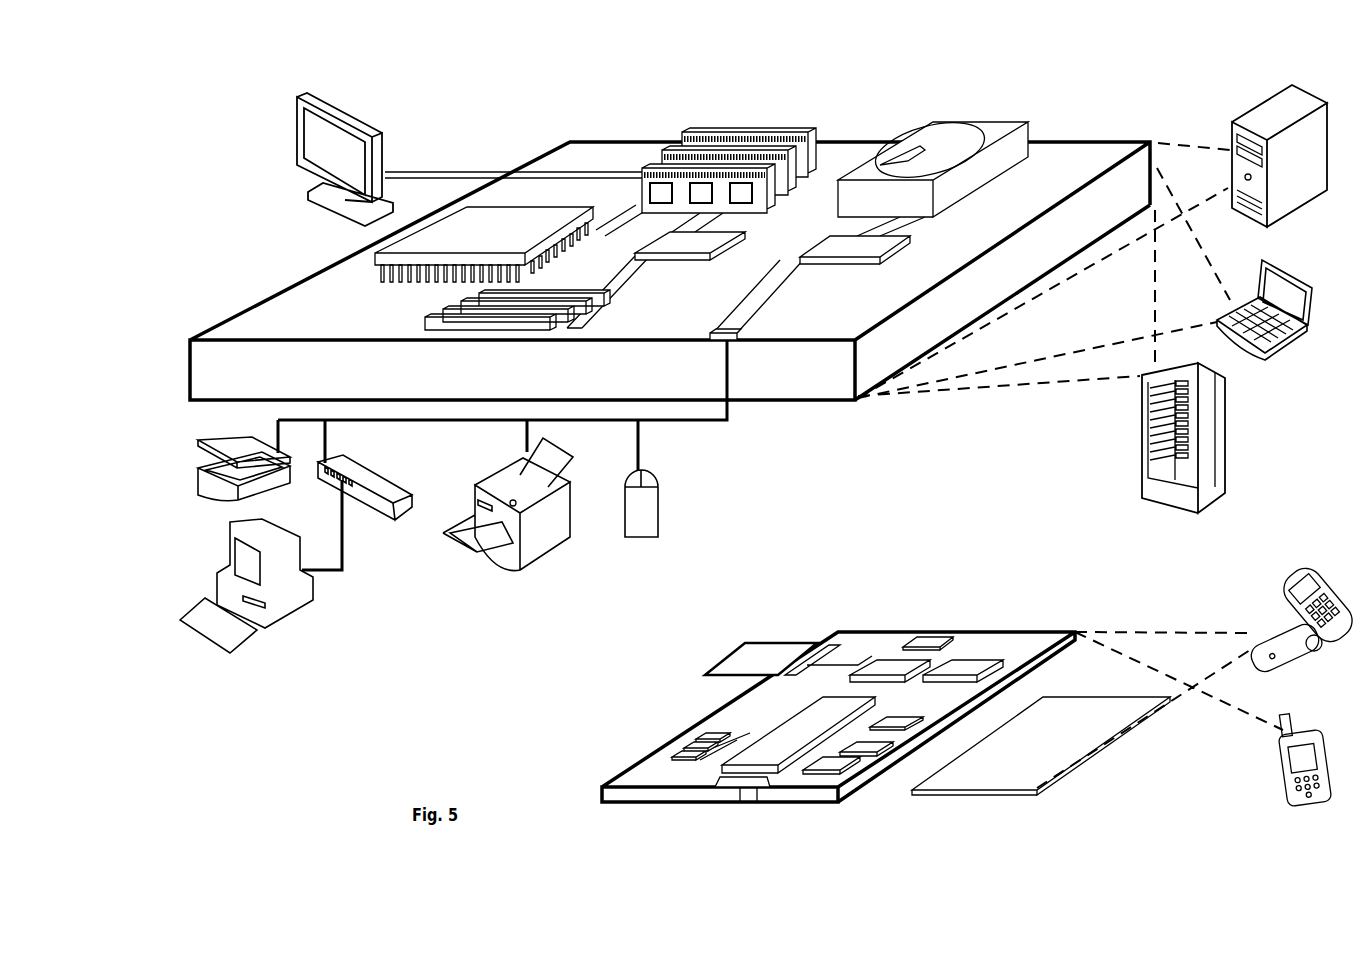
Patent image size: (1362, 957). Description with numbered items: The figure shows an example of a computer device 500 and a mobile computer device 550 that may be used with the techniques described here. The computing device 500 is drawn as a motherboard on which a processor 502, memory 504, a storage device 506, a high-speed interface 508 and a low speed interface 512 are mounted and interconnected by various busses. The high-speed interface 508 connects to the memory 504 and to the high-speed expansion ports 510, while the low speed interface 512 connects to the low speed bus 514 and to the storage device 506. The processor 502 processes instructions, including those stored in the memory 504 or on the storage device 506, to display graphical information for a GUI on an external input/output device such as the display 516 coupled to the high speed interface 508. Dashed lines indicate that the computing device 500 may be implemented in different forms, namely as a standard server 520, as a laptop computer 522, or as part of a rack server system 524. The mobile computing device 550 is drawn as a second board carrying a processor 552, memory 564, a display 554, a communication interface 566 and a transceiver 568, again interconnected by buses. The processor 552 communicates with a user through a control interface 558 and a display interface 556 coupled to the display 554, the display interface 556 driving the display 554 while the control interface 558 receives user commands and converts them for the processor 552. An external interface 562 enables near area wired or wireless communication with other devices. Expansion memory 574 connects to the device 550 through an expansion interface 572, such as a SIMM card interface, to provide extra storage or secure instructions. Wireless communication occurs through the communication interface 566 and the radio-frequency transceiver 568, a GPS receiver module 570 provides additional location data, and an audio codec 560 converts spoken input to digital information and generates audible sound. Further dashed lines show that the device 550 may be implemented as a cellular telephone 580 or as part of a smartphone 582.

The computing device 500 is at (500, 110).
The processor 502 is at (373, 260).
The memory 504 is at (690, 133).
The storage device 506 is at (918, 123).
The high-speed interface 508 is at (668, 240).
The high-speed expansion ports 510 is at (443, 308).
The low speed interface 512 is at (853, 243).
The low speed bus 514 is at (742, 342).
The display 516 is at (298, 103).
The standard server 520 is at (1217, 127).
The laptop computer 522 is at (1252, 262).
The rack server system 524 is at (1140, 462).
The mobile computer device 550 is at (819, 604).
The processor 552 is at (772, 774).
The display 554 is at (1038, 788).
The display interface 556 is at (853, 788).
The control interface 558 is at (882, 748).
The audio codec 560 is at (890, 726).
The external interface 562 is at (733, 790).
The memory 564 is at (678, 742).
The communication interface 566 is at (887, 668).
The transceiver 568 is at (963, 668).
The GPS receiver module 570 is at (925, 637).
The expansion interface 572 is at (803, 642).
The expansion memory 574 is at (738, 643).
The cellular telephone 580 is at (1300, 573).
The smartphone 582 is at (1283, 708).